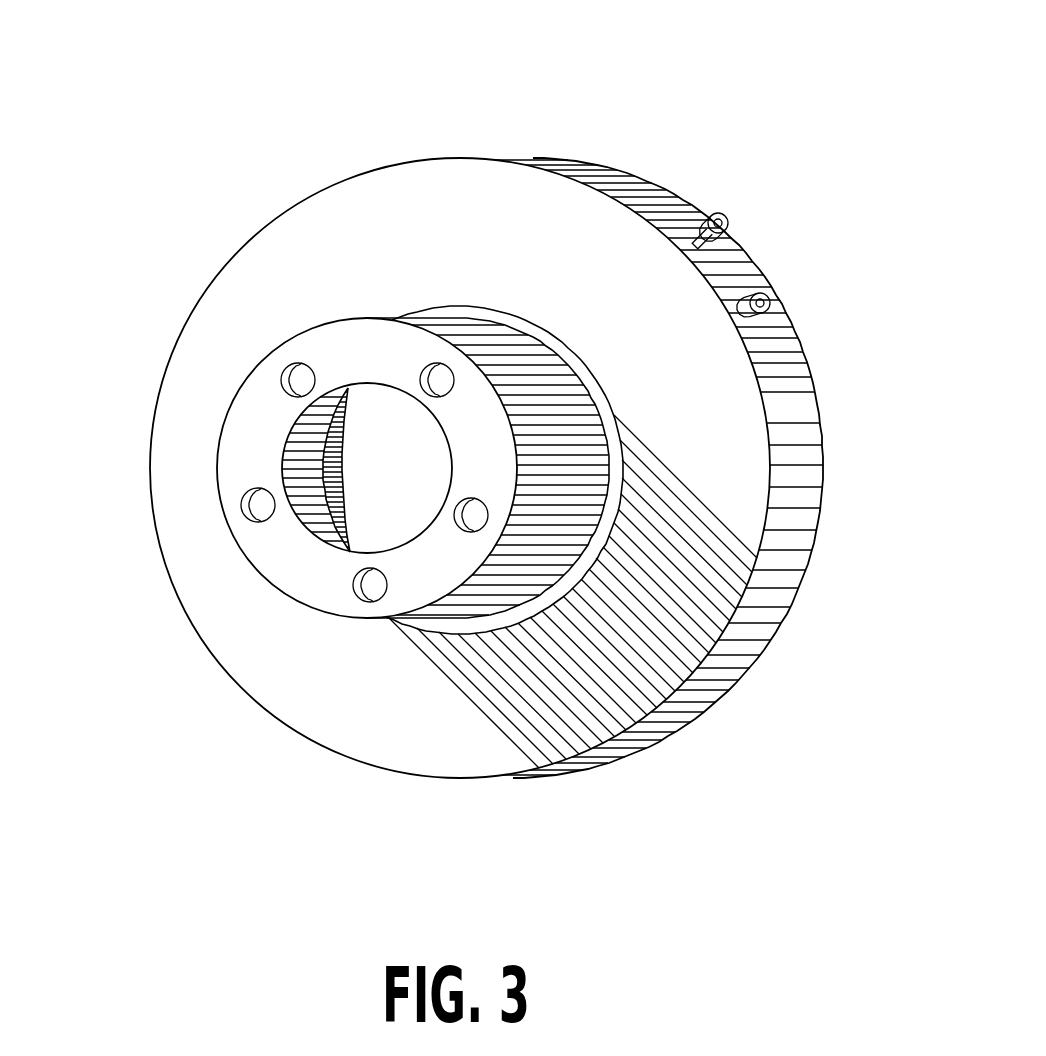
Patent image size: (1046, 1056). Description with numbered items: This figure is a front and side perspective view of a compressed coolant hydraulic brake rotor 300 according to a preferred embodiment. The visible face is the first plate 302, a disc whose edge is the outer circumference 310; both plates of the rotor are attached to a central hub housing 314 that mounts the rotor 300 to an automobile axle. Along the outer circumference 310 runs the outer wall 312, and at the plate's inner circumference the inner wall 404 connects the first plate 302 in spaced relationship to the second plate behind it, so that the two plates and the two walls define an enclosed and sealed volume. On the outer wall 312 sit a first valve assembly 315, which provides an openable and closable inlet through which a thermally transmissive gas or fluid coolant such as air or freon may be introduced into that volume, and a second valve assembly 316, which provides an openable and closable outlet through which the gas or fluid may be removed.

The rotor 300 is at (581, 107).
The first plate 302 is at (388, 215).
The outer circumference 310 is at (242, 714).
The outer wall 312 is at (775, 583).
The hub housing 314 is at (257, 412).
The first valve assembly 315 is at (730, 222).
The second valve assembly 316 is at (770, 303).
The inner wall 404 is at (332, 503).